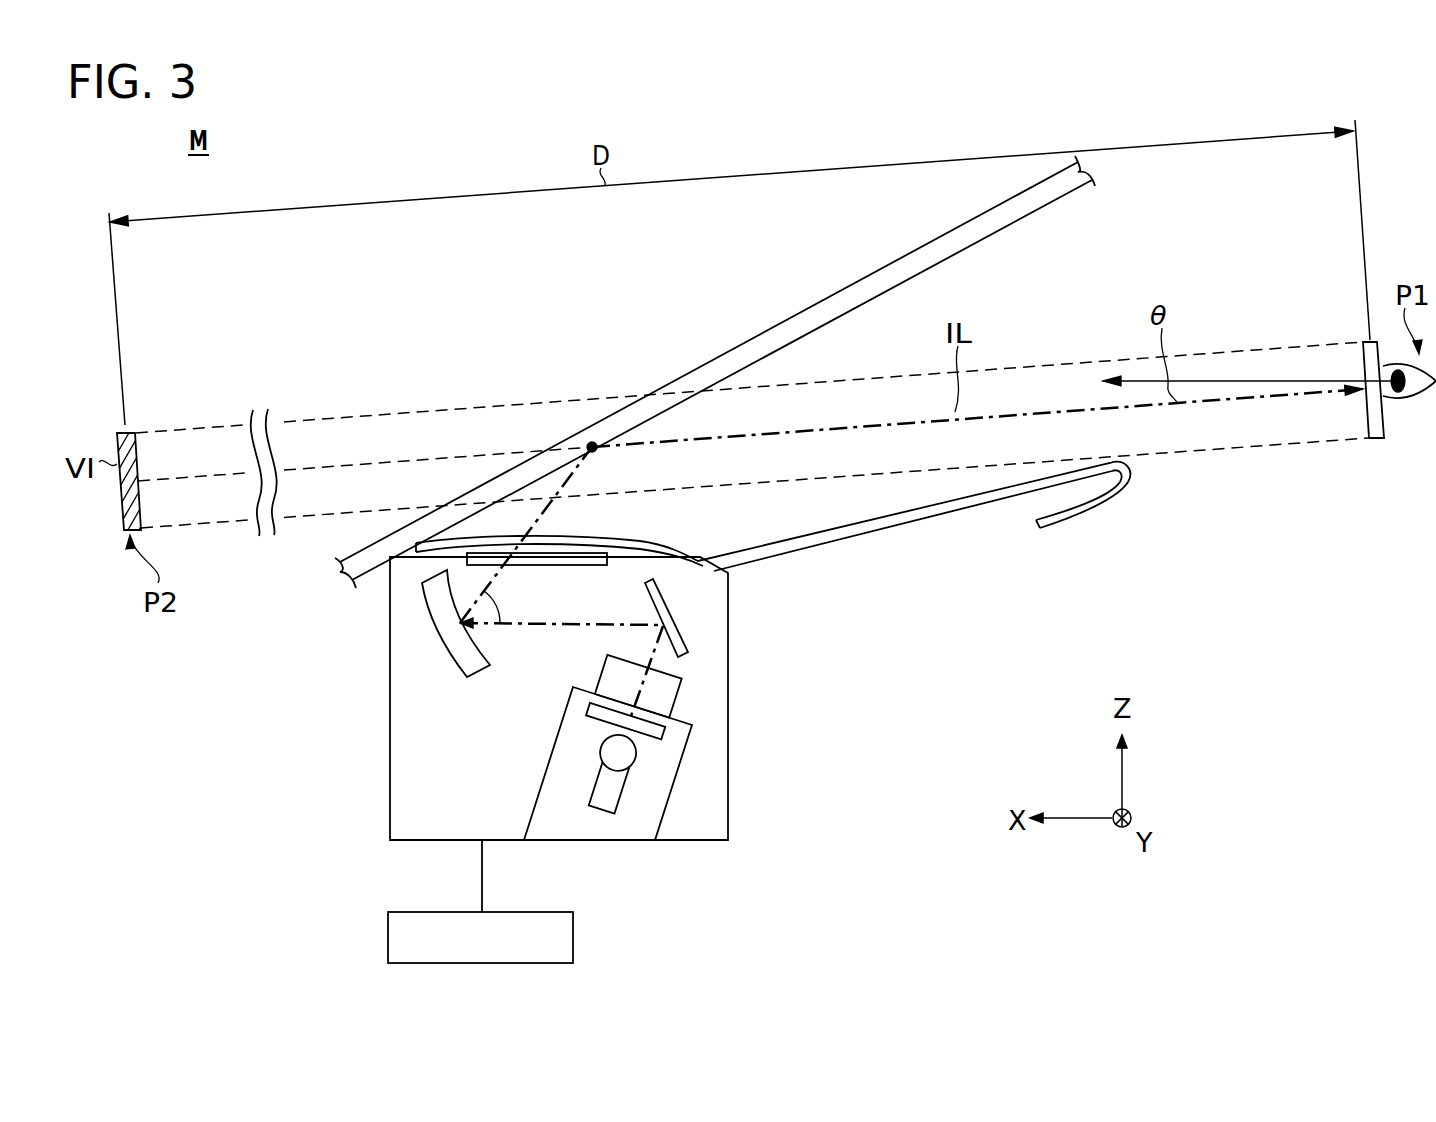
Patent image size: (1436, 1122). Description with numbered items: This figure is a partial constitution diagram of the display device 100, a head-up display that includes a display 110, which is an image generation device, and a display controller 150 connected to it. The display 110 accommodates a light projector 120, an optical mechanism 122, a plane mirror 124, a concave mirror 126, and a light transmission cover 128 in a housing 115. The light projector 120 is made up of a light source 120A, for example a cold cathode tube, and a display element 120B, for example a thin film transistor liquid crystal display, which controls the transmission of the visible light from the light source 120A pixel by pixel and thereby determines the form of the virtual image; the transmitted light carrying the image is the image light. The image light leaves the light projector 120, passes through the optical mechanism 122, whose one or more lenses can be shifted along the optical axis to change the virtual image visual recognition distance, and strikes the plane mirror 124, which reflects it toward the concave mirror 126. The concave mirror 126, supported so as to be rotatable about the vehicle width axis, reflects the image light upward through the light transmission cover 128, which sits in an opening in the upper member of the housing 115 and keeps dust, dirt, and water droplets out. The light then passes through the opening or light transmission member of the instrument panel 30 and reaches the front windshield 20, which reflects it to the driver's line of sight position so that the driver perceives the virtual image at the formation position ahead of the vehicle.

The front windshield 20 is at (890, 264).
The instrument panel 30 is at (928, 517).
The display device 100 is at (313, 853).
The display 110 is at (588, 710).
The housing 115 is at (390, 636).
The light projector 120 is at (557, 736).
The light source 120A is at (615, 812).
The display element 120B is at (672, 738).
The optical mechanism 122 is at (674, 703).
The plane mirror 124 is at (683, 639).
The concave mirror 126 is at (450, 652).
The light transmission cover 128 is at (572, 566).
The display controller 150 is at (508, 911).